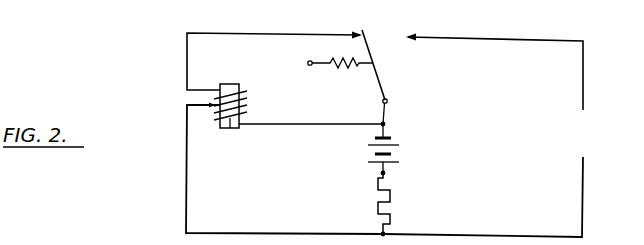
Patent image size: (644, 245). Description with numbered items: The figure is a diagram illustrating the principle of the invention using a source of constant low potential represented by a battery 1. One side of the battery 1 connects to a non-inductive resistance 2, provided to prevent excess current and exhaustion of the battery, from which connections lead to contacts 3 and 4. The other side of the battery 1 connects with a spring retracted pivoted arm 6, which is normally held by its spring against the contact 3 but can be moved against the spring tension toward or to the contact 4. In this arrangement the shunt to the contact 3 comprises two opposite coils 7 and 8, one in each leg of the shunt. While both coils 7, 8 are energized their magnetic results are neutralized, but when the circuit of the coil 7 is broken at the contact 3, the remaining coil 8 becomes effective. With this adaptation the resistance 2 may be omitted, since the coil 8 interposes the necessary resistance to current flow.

The battery 1 is at (389, 148).
The non-inductive resistance 2 is at (390, 203).
The contact 3 is at (351, 26).
The contact 4 is at (416, 28).
The spring retracted pivoted arm 6 is at (348, 77).
The coil 7 is at (245, 89).
The coil 8 is at (230, 128).